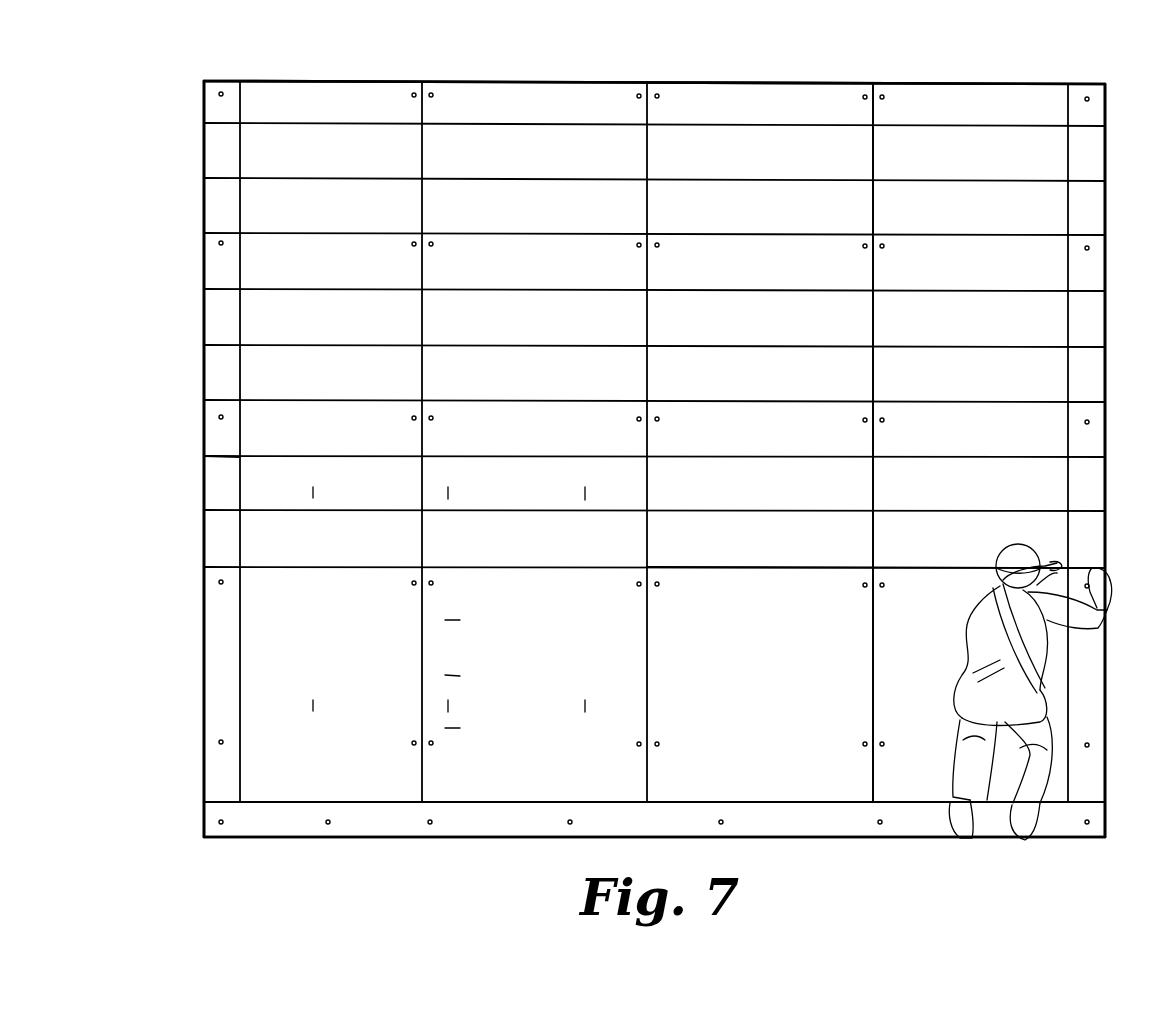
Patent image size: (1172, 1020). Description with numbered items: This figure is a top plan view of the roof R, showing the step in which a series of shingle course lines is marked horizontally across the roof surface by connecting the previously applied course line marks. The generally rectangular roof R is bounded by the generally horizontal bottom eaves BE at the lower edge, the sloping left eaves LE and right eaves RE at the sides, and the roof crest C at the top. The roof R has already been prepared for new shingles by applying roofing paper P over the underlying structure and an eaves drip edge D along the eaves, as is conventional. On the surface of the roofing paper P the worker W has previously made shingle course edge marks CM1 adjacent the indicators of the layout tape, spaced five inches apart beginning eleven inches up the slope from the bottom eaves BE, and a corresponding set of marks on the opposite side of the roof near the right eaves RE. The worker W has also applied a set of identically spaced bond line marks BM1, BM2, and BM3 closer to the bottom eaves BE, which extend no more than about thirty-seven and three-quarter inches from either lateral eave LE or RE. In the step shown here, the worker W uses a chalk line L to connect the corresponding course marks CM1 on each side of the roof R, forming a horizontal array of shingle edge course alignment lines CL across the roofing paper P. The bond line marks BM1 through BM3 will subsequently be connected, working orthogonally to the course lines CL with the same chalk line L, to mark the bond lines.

The roof crest C is at (661, 82).
The left eaves LE is at (204, 425).
The right eaves RE is at (1107, 372).
The bottom eaves BE is at (517, 838).
The eaves drip edge D is at (218, 483).
The roofing paper P is at (261, 597).
The first bond line mark BM1 is at (313, 504).
The second bond line mark BM2 is at (454, 503).
The third bond line mark BM3 is at (585, 505).
The shingle course edge mark CM1 is at (441, 627).
The shingle edge course alignment line CL is at (760, 345).
The chalk line L is at (725, 568).
The worker W is at (968, 641).
The roof R is at (358, 858).